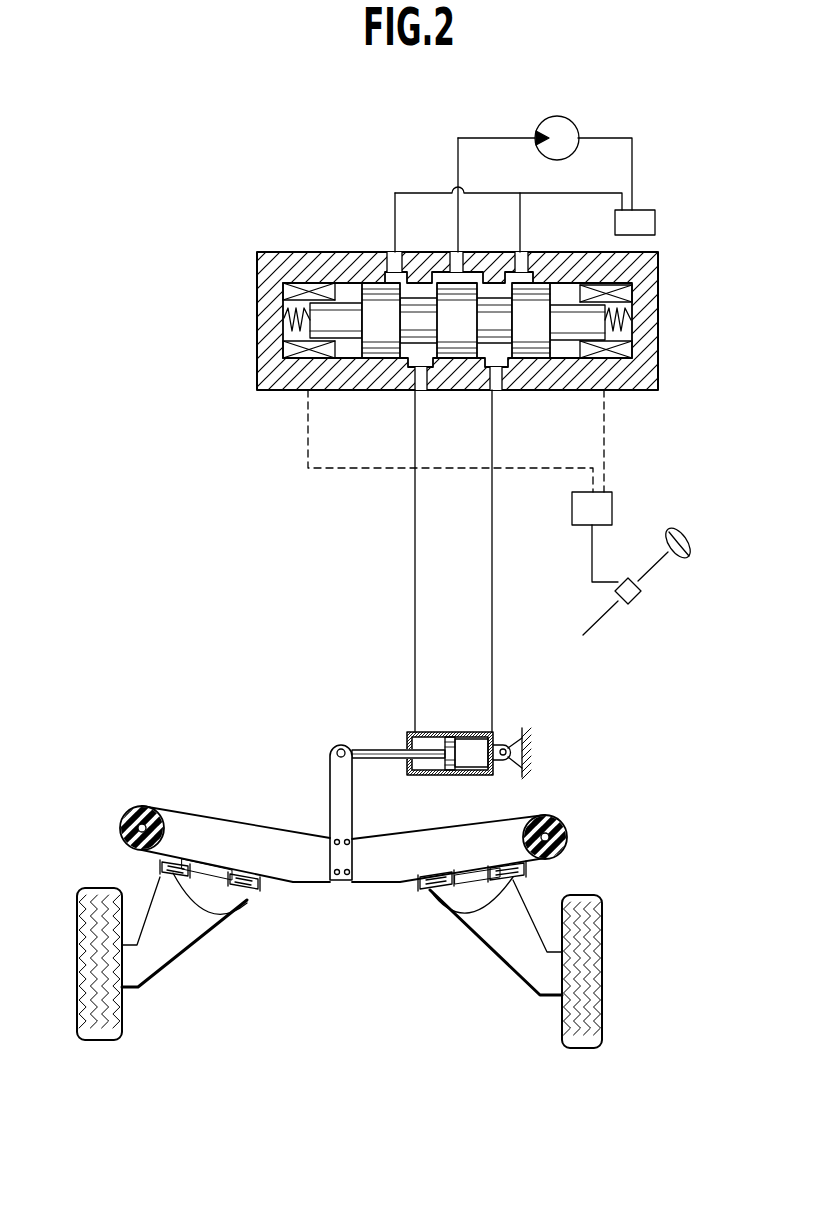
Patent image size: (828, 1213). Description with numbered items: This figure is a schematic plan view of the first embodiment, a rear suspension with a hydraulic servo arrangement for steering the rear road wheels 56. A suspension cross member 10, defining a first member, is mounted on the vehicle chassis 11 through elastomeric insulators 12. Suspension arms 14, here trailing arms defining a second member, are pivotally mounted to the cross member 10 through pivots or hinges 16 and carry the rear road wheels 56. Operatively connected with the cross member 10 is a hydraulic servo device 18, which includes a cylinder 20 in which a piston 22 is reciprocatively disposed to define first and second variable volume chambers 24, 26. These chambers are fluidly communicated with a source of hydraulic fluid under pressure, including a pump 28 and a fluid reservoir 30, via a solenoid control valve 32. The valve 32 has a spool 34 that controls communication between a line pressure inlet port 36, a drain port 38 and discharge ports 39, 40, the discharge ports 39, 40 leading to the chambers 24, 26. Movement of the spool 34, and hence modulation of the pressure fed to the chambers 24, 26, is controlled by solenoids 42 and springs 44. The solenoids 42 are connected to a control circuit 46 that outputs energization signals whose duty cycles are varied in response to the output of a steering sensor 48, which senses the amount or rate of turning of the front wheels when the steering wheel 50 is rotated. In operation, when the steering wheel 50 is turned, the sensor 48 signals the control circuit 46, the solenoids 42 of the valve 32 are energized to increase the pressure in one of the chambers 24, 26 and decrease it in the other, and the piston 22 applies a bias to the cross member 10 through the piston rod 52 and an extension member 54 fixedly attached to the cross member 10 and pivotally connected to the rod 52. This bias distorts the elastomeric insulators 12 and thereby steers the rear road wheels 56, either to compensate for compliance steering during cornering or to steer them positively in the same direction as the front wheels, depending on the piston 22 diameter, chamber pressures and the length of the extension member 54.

The suspension cross member 10 is at (205, 817).
The vehicle chassis 11 is at (535, 760).
The elastomeric insulators 12 is at (120, 826).
The suspension arms 14 is at (192, 932).
The pivots 16 is at (240, 893).
The hydraulic servo device 18 is at (398, 725).
The cylinder 20 is at (495, 732).
The piston 22 is at (450, 773).
The first variable volume chamber 24 is at (428, 745).
The second variable volume chamber 26 is at (473, 745).
The pump 28 is at (562, 127).
The fluid reservoir 30 is at (642, 217).
The solenoid control valve 32 is at (248, 329).
The spool 34 is at (375, 293).
The line pressure inlet port 36 is at (455, 252).
The drain port 38 is at (392, 252).
The discharge port 39 is at (417, 392).
The discharge port 40 is at (495, 392).
The solenoids 42 is at (287, 347).
The springs 44 is at (285, 317).
The control circuit 46 is at (580, 525).
The steering sensor 48 is at (632, 603).
The steering wheel 50 is at (688, 560).
The piston rod 52 is at (367, 752).
The extension member 54 is at (330, 783).
The rear road wheels 56 is at (118, 1020).